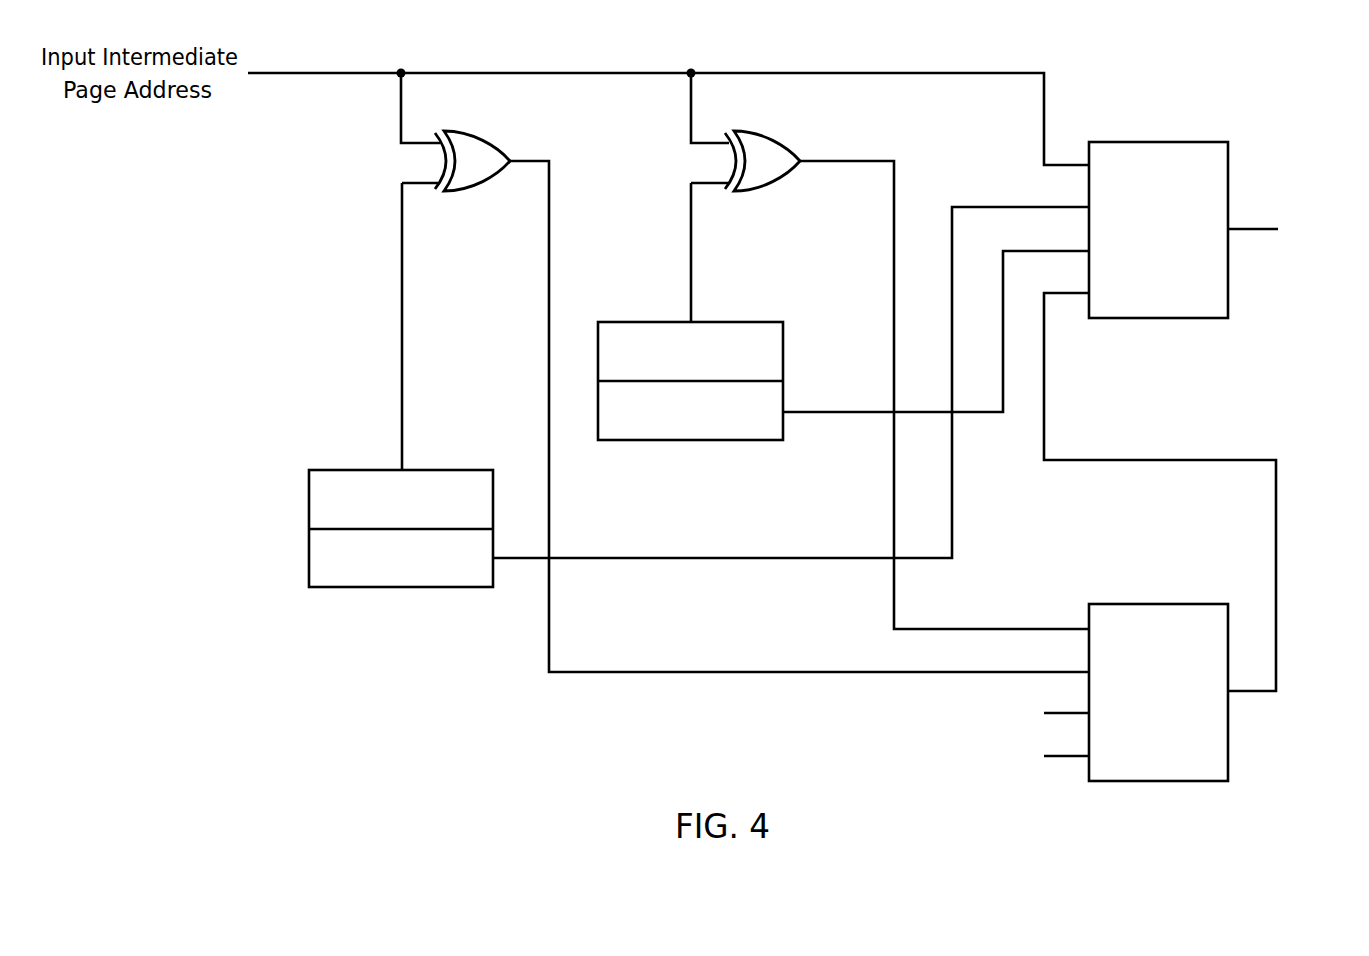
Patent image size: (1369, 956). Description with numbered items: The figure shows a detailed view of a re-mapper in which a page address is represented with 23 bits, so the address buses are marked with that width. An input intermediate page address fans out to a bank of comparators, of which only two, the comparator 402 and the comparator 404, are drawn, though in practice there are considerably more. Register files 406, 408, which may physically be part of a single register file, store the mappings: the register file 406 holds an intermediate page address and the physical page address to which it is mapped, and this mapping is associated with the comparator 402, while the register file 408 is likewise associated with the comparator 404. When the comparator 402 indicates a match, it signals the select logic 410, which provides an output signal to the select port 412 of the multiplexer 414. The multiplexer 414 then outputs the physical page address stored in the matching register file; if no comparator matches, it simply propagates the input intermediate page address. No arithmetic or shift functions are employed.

The bits 23 is at (345, 60).
The comparator 402 is at (478, 131).
The comparator 404 is at (767, 131).
The register file 406 is at (347, 470).
The register file 408 is at (652, 322).
The select logic 410 is at (1152, 604).
The select port 412 is at (1044, 387).
The multiplexer 414 is at (1152, 142).